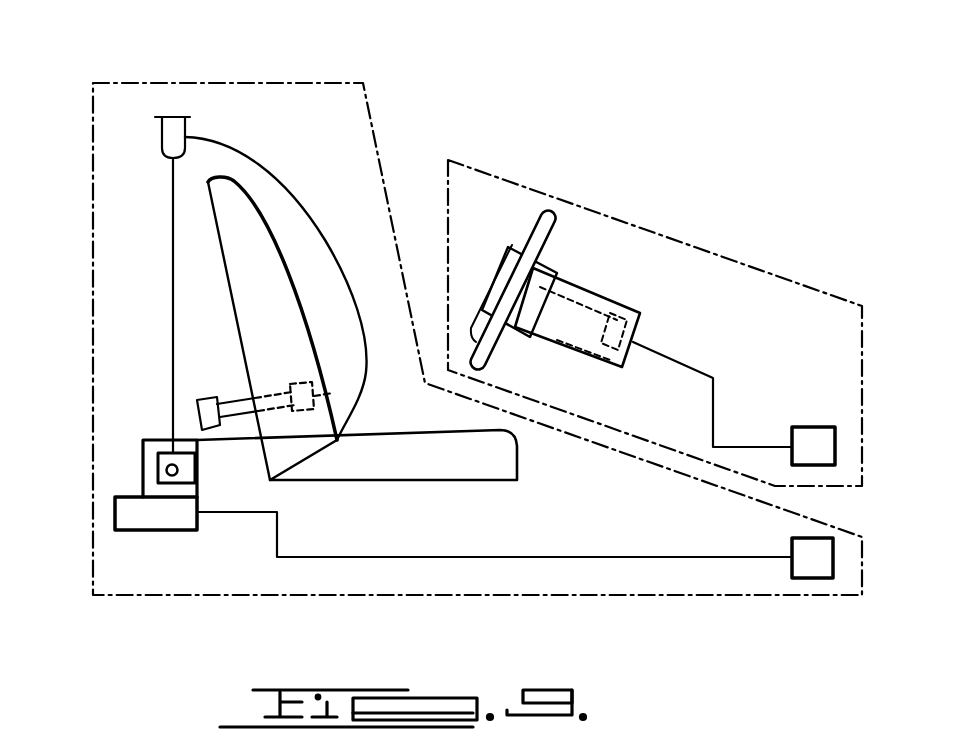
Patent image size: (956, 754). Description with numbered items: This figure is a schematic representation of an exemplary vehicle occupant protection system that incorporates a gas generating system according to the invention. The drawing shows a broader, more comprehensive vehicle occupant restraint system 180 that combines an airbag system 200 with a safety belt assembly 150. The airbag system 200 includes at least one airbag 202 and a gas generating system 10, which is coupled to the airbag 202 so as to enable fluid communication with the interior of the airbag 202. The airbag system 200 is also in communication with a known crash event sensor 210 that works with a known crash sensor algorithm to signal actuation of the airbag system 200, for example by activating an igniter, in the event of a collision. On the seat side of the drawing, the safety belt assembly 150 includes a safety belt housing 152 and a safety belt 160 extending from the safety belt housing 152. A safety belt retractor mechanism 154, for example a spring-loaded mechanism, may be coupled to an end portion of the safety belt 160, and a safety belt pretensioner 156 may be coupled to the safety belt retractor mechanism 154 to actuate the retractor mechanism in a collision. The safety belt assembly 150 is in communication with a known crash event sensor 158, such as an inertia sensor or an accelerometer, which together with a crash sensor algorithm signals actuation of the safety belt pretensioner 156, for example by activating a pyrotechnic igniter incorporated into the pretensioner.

The vehicle occupant restraint system 180 is at (510, 86).
The safety belt assembly 150 is at (238, 80).
The safety belt 160 is at (293, 190).
The safety belt retractor mechanism 154 is at (143, 440).
The safety belt housing 152 is at (160, 472).
The safety belt pretensioner 156 is at (160, 522).
The crash event sensor 158 is at (808, 568).
The airbag system 200 is at (718, 250).
The gas generating system 10 is at (590, 315).
The airbag 202 is at (556, 247).
The crash event sensor 210 is at (810, 437).